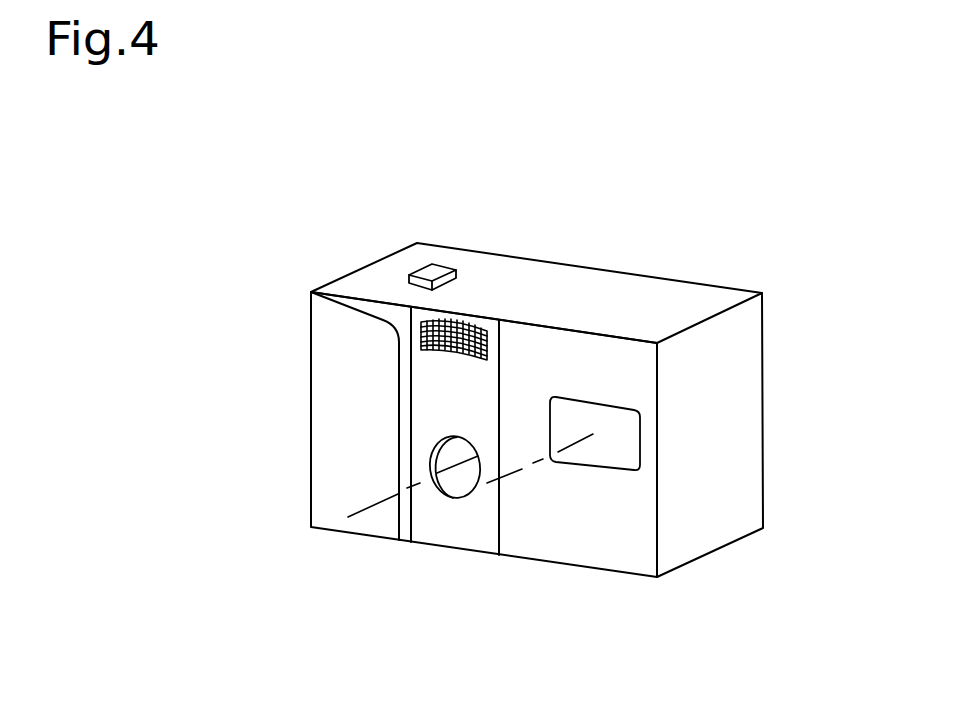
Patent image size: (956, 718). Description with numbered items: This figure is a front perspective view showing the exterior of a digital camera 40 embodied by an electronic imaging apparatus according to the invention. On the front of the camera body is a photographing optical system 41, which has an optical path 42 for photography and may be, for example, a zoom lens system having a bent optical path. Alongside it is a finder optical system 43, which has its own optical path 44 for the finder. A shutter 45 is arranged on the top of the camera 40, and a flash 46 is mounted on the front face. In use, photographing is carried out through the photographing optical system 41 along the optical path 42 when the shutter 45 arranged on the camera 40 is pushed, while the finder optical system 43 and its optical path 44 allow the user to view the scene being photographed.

The digital camera 40 is at (769, 482).
The photographing optical system 41 is at (458, 488).
The optical path for photography 42 is at (407, 488).
The finder optical system 43 is at (613, 440).
The optical path for the finder 44 is at (542, 460).
The shutter 45 is at (432, 266).
The flash 46 is at (450, 323).